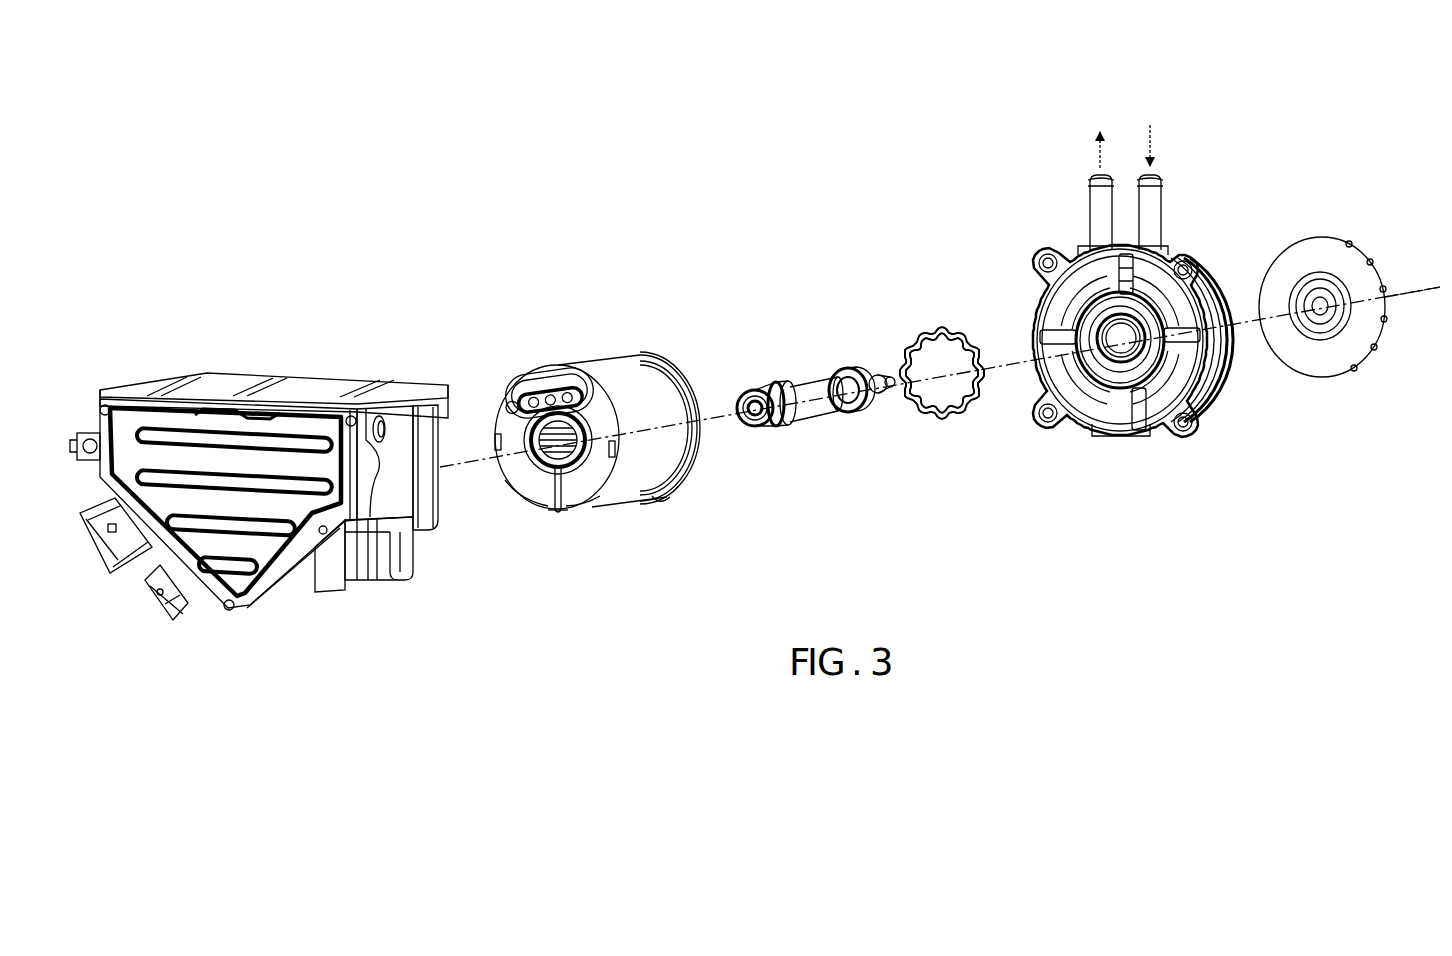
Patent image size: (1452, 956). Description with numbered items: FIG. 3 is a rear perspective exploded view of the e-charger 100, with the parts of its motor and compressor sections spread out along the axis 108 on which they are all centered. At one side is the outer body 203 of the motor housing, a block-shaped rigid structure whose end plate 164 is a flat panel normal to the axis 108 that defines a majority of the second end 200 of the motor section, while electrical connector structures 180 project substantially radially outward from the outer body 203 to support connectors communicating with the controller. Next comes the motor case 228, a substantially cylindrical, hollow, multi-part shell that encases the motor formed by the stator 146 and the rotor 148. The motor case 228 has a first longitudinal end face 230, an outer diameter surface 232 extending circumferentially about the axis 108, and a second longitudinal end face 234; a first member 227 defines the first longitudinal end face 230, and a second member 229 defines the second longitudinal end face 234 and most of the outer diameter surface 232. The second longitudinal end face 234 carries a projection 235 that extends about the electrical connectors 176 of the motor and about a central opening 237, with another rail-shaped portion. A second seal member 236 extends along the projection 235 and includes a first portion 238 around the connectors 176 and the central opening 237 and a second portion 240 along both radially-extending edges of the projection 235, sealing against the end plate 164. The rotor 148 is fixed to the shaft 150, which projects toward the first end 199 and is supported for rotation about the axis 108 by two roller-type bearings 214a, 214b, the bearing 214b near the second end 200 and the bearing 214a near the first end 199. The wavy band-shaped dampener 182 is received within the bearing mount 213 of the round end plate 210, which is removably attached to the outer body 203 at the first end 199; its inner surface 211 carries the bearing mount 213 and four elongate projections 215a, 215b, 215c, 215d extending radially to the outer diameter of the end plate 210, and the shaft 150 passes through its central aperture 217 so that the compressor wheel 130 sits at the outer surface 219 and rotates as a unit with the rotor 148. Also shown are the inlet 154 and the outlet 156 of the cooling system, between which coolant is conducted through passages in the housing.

The e-charger 100 is at (215, 156).
The axis 108 is at (1385, 295).
The compressor wheel 130 is at (1318, 243).
The stator 146 is at (533, 452).
The rotor 148 is at (798, 383).
The shaft 150 is at (750, 416).
The inlet 154 is at (1158, 205).
The outlet 156 is at (1092, 205).
The end plate 164 is at (247, 525).
The electrical connectors 176 is at (511, 394).
The electrical connector structures 180 is at (104, 562).
The dampener 182 is at (953, 416).
The first end 199 is at (1190, 252).
The second end 200 is at (200, 453).
The outer body 203 is at (300, 382).
The end plate 210 is at (1238, 381).
The inner surface 211 is at (1110, 406).
The bearing mount 213 is at (1080, 398).
The bearing 214a is at (852, 413).
The bearing 214b is at (770, 428).
The projection 215a is at (1104, 273).
The projection 215b is at (1106, 338).
The projection 215c is at (1142, 414).
The projection 215d is at (1180, 350).
The central aperture 217 is at (1085, 322).
The outer surface 219 is at (1214, 285).
The first member 227 is at (690, 384).
The motor case 228 is at (572, 358).
The second member 229 is at (582, 505).
The first longitudinal end face 230 is at (666, 362).
The outer diameter surface 232 is at (660, 488).
The second longitudinal end face 234 is at (575, 520).
The projection 235 is at (550, 500).
The second seal member 236 is at (590, 470).
The central opening 237 is at (524, 442).
The first portion 238 is at (592, 445).
The second portion 240 is at (563, 512).